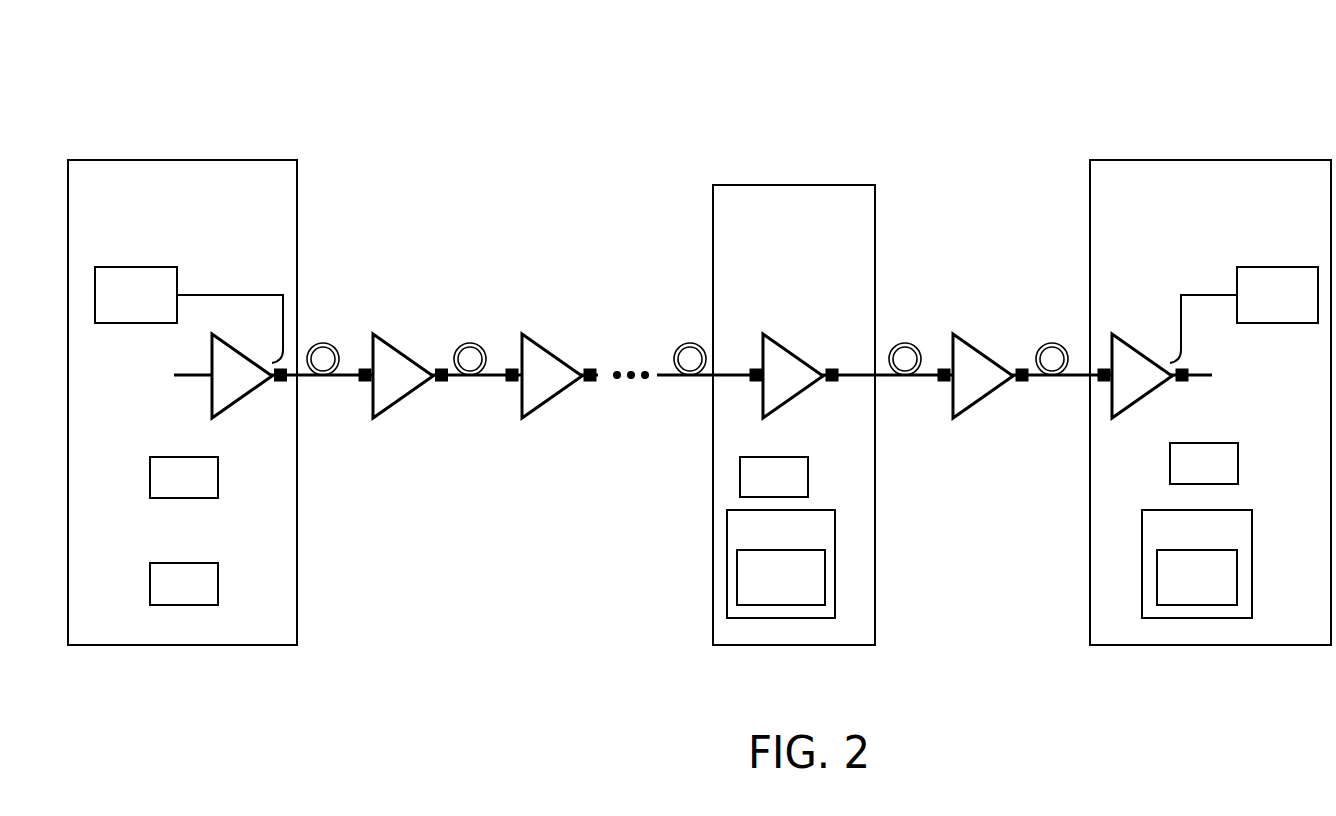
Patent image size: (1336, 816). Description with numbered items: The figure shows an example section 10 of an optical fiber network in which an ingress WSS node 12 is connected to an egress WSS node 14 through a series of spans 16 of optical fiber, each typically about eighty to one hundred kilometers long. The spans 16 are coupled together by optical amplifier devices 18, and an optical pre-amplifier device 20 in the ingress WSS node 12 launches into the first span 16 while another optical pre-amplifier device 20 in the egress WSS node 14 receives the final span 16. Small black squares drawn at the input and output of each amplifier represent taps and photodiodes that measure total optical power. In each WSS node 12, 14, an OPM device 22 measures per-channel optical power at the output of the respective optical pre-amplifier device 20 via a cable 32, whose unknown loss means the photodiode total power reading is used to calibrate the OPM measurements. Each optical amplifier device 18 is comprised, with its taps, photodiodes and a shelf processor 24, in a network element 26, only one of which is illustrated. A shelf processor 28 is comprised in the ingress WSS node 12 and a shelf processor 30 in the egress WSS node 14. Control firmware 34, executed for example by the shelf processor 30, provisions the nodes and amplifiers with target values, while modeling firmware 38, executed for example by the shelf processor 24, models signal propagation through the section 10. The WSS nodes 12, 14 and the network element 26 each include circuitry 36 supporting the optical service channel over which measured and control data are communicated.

The section 10 is at (242, 88).
The ingress WSS node 12 is at (261, 189).
The egress WSS node 14 is at (1288, 189).
The span of optical fiber 16 is at (334, 380).
The optical amplifier device 18 is at (383, 385).
The optical pre-amplifier device 20 is at (221, 385).
The OPM device 22 is at (138, 267).
The shelf processor 24 is at (835, 567).
The network element 26 is at (807, 272).
The shelf processor 28 is at (185, 563).
The shelf processor 30 is at (1253, 563).
The cable 32 is at (256, 294).
The control firmware 34 is at (1238, 575).
The circuitry 36 is at (185, 457).
The modeling firmware 38 is at (825, 575).